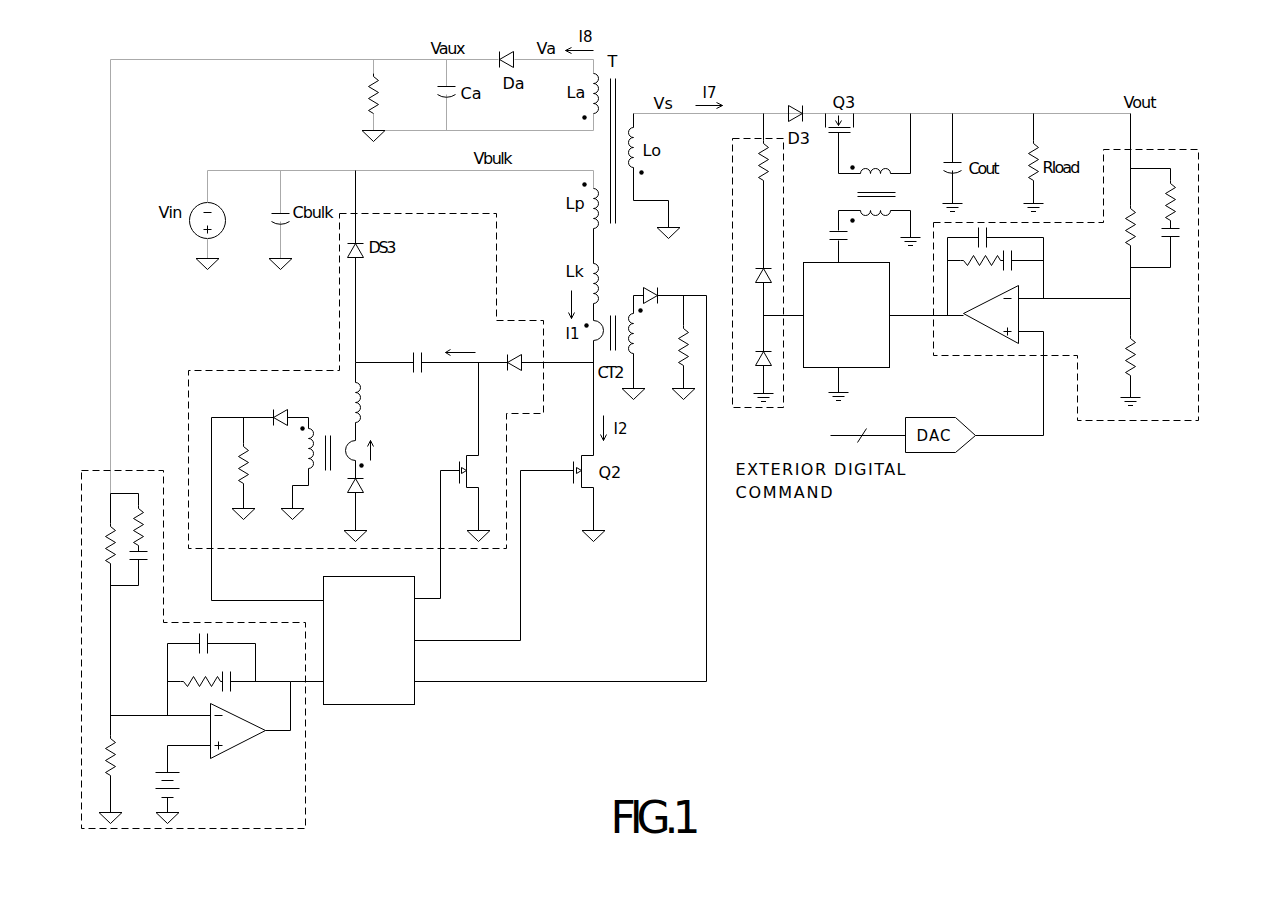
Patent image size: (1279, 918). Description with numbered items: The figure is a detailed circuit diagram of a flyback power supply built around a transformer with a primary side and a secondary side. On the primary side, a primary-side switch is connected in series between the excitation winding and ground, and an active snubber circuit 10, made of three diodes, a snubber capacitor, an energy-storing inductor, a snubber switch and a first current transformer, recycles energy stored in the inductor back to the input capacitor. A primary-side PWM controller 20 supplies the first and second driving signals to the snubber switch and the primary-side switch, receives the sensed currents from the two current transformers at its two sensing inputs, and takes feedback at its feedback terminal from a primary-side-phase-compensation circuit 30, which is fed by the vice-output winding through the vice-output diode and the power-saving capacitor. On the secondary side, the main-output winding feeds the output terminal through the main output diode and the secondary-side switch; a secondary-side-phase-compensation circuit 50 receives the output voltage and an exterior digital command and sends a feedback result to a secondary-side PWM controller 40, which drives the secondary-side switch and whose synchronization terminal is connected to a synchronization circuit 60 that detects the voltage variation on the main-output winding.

The active snubber circuit 10 is at (496, 258).
The primary-side PWM controller 20 is at (378, 704).
The primary-side-phase-compensation circuit 30 is at (305, 782).
The secondary-side PWM controller 40 is at (820, 367).
The secondary-side-phase-compensation circuit 50 is at (1198, 340).
The synchronization circuit 60 is at (745, 138).